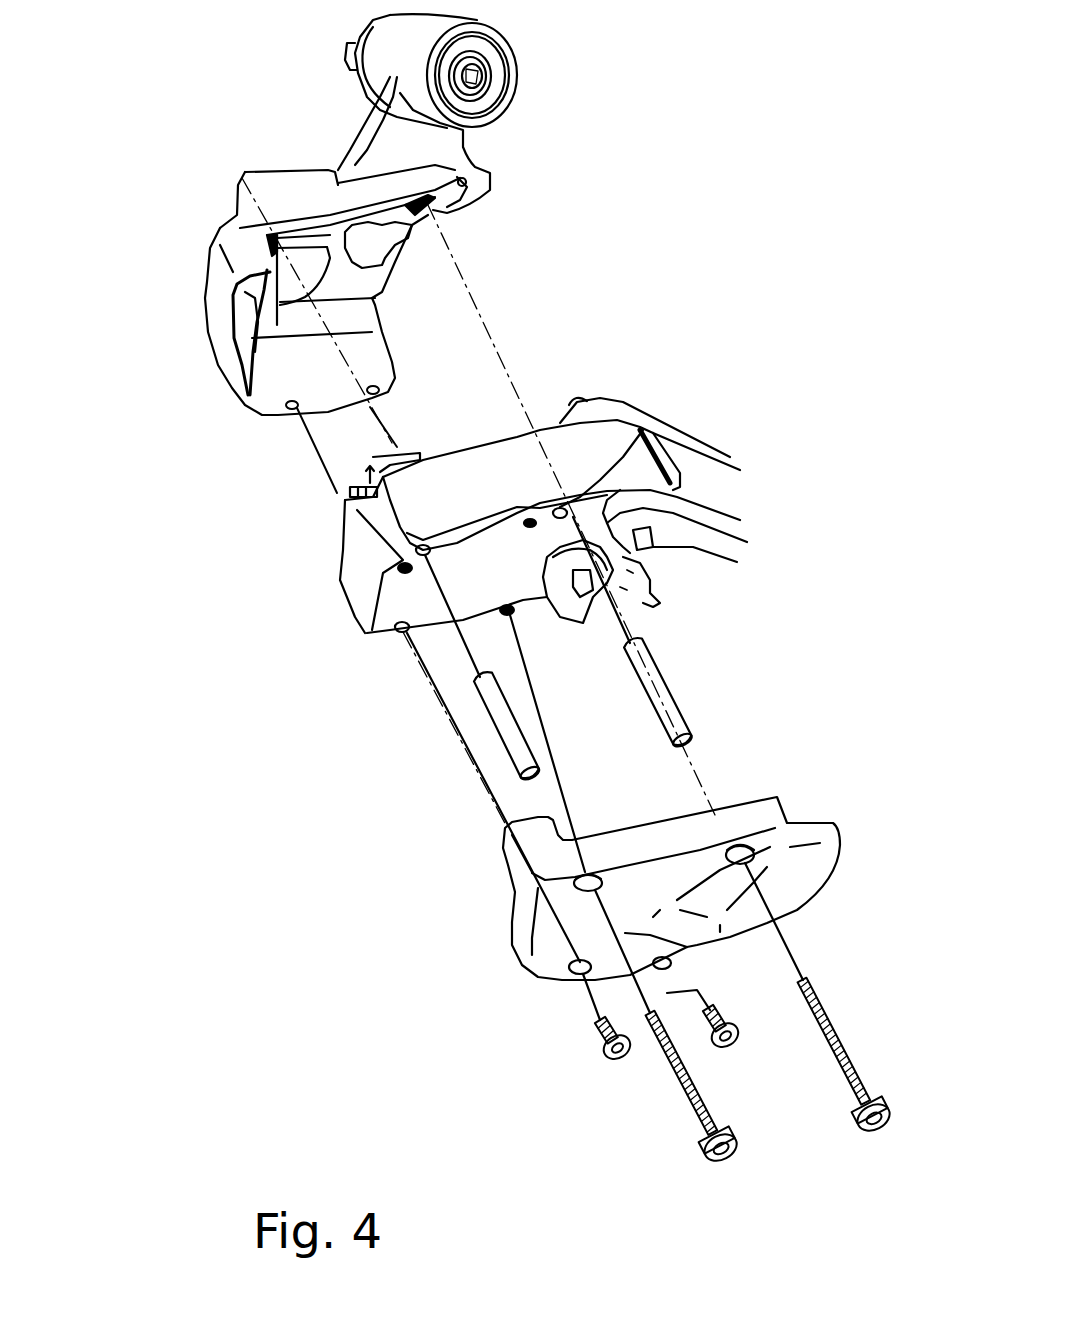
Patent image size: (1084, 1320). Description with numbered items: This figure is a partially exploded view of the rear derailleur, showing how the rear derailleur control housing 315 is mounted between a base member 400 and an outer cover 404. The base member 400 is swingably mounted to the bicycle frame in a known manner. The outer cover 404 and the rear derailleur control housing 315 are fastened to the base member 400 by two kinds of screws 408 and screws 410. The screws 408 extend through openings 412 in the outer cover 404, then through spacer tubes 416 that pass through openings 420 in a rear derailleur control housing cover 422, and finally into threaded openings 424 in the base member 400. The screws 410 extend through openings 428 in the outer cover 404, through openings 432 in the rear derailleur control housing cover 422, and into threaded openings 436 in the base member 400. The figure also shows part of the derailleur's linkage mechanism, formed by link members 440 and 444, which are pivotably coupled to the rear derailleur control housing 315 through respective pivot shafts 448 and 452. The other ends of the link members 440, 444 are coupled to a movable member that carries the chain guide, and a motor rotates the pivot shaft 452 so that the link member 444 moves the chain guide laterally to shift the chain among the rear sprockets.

The rear derailleur control housing 315 is at (343, 557).
The base member 400 is at (370, 118).
The outer cover 404 is at (528, 905).
The screws 408 is at (710, 1160).
The screws 410 is at (607, 1062).
The openings 412 is at (595, 878).
The spacer tubes 416 is at (503, 723).
The openings 420 is at (460, 512).
The rear derailleur control housing cover 422 is at (360, 623).
The threaded openings 424 is at (276, 250).
The openings 428 is at (573, 970).
The openings 432 is at (400, 633).
The threaded openings 436 is at (290, 407).
The link member 440 is at (713, 483).
The link member 444 is at (657, 590).
The pivot shaft 448 is at (575, 395).
The pivot shaft 452 is at (590, 605).